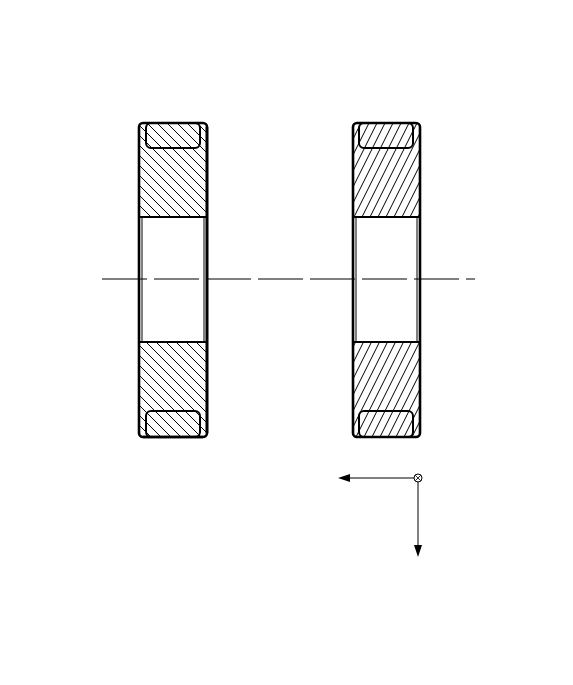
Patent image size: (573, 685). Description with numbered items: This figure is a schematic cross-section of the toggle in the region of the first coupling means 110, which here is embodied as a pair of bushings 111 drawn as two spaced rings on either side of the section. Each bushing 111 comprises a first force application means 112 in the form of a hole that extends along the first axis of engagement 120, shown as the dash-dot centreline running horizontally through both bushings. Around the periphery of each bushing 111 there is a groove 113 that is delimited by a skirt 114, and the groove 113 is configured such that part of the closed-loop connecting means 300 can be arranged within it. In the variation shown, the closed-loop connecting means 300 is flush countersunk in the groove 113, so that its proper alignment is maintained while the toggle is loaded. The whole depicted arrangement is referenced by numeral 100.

The bearing assembly 100 is at (263, 315).
The first coupling means 110 is at (263, 285).
The bushing 111 is at (260, 285).
The first force application means 112 is at (132, 276).
The groove 113 is at (135, 500).
The skirt 114 is at (242, 347).
The first axis of engagement 120 is at (266, 302).
The closed-loop connecting means 300 is at (279, 234).